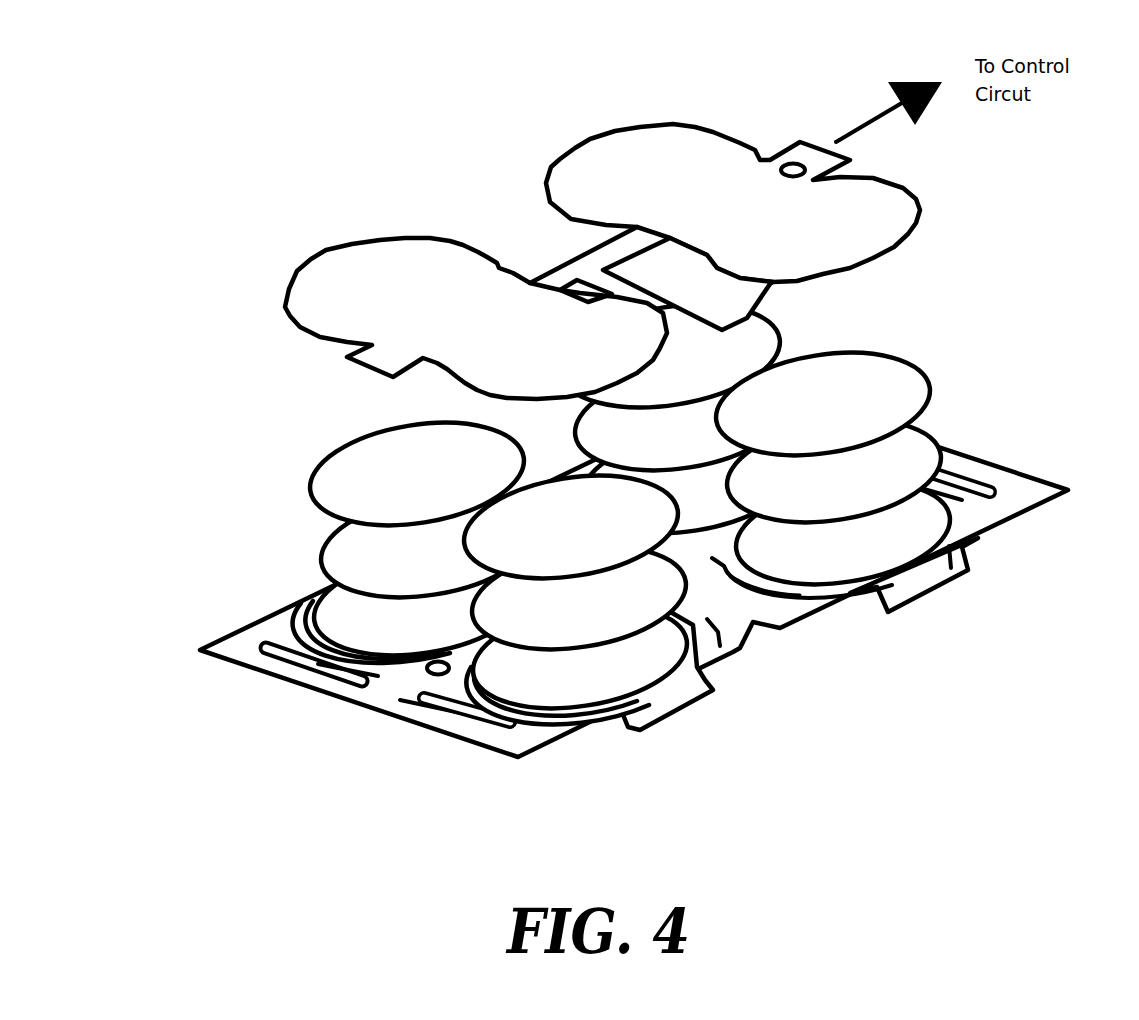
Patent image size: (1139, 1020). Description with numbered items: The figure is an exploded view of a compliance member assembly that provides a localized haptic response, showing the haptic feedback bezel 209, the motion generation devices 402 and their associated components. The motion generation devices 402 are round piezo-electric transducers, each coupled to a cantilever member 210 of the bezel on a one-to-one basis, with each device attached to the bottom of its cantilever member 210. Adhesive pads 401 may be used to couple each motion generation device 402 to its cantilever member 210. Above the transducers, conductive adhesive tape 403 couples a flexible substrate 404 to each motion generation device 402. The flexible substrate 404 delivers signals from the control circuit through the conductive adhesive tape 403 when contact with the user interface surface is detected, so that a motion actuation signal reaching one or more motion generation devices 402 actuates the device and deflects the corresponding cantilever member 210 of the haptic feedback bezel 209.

The haptic feedback bezel 209 is at (383, 693).
The cantilever member 210 is at (952, 592).
The adhesive pad 401 is at (903, 527).
The motion generation device 402 is at (870, 470).
The conductive adhesive tape 403 is at (870, 387).
The flexible substrate 404 is at (448, 315).